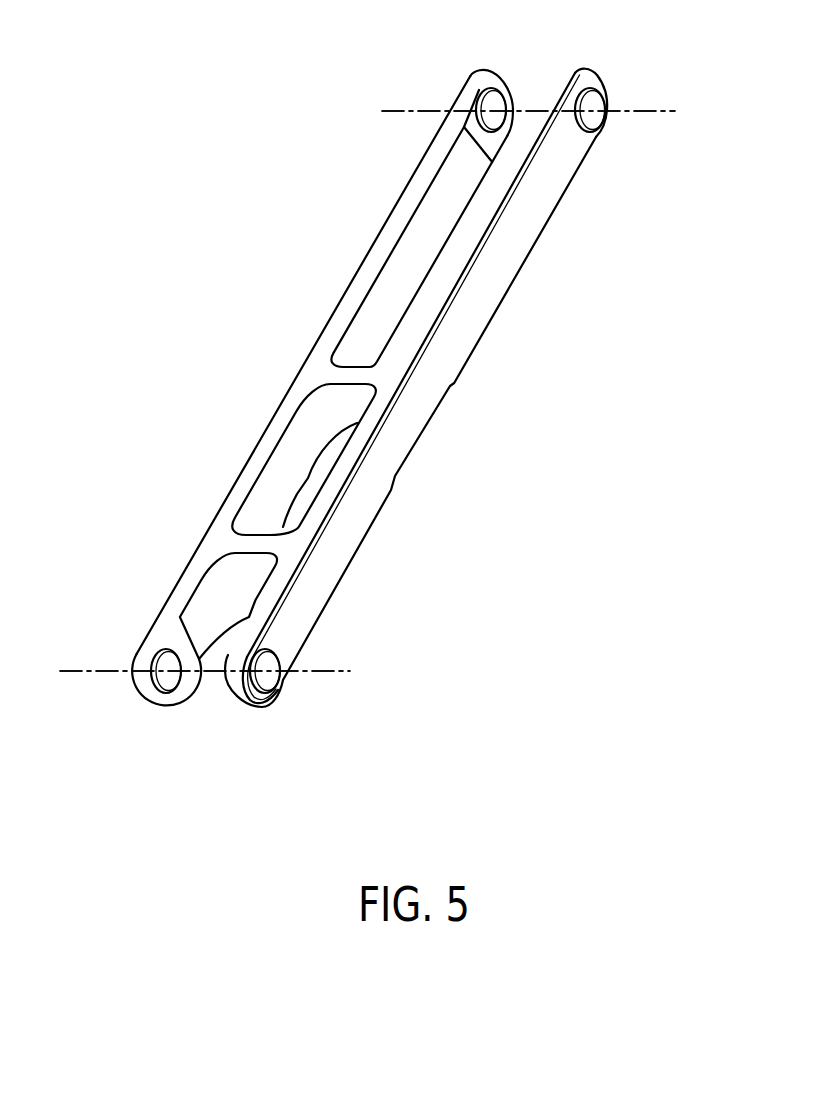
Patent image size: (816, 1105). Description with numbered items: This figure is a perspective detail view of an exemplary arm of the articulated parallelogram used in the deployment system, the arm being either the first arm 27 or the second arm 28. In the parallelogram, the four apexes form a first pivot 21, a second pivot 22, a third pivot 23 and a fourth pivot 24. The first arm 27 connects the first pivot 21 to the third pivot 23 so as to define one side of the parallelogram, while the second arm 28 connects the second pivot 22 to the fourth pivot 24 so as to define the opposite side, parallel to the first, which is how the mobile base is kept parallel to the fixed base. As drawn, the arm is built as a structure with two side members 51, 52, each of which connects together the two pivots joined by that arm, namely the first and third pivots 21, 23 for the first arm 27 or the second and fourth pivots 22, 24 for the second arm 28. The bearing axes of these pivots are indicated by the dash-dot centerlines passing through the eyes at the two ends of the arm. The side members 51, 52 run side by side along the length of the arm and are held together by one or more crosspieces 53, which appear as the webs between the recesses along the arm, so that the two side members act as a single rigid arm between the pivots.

The first pivot 21 is at (342, 672).
The second pivot 22 is at (342, 672).
The third pivot 23 is at (657, 111).
The fourth pivot 24 is at (657, 111).
The first arm 27 is at (195, 202).
The second arm 28 is at (195, 202).
The side member 51 is at (478, 316).
The side member 52 is at (420, 218).
The crosspiece 53 is at (344, 372).